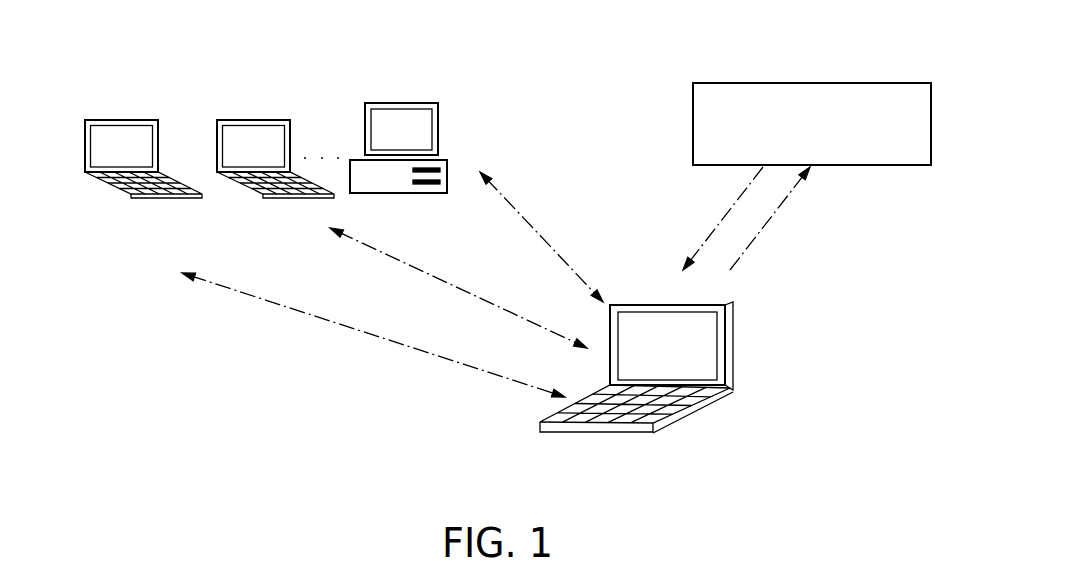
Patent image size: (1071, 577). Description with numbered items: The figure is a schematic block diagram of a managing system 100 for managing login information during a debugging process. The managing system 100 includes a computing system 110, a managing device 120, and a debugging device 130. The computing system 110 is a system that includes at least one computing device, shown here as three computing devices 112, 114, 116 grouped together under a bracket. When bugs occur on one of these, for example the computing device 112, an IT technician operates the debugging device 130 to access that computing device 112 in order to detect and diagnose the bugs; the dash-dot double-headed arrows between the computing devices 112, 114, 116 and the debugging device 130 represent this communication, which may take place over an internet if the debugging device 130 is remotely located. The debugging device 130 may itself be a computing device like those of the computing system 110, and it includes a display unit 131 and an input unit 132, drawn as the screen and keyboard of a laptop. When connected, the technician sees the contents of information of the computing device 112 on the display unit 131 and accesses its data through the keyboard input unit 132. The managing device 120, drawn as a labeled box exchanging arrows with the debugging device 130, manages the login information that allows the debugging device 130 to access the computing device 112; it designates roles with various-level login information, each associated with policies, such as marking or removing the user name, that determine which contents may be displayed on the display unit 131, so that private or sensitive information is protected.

The managing system 100 is at (401, 458).
The computing system 110 is at (73, 92).
The computing device 112 is at (165, 200).
The computing device 114 is at (297, 200).
The computing device 116 is at (398, 195).
The managing device 120 is at (808, 83).
The debugging device 130 is at (825, 295).
The display unit 131 is at (695, 348).
The input unit 132 is at (667, 408).